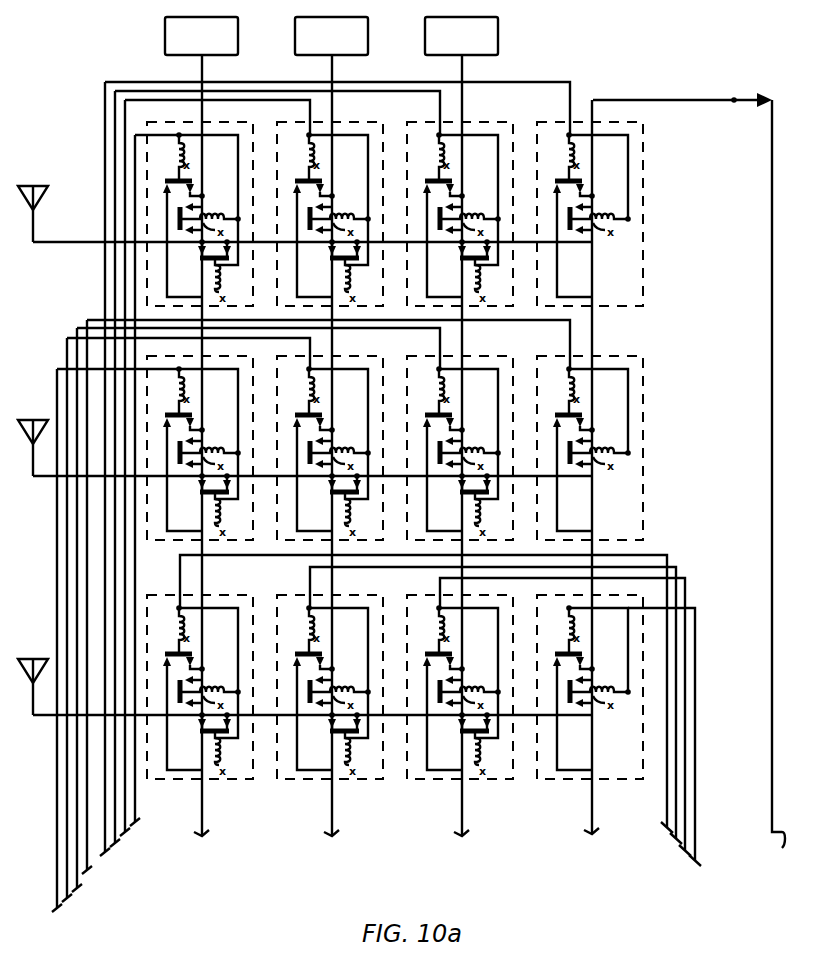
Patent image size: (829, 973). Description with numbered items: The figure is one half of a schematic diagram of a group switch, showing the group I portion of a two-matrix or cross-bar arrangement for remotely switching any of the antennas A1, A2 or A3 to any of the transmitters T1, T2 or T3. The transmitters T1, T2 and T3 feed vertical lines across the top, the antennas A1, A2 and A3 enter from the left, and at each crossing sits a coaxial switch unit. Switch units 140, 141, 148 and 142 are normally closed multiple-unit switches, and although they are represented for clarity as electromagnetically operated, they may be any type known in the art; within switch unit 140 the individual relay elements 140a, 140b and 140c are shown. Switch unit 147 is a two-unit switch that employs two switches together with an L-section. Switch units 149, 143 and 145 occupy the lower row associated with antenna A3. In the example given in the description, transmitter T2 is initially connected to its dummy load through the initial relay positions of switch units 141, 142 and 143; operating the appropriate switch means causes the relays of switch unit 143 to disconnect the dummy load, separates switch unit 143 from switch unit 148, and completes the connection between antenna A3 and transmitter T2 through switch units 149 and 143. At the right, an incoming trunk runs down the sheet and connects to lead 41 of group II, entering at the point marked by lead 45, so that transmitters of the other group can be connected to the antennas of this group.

The switch unit 140 is at (195, 205).
The crosspoint relay winding 140a is at (207, 156).
The crosspoint holding relay 140b is at (210, 216).
The crosspoint release winding 140c is at (200, 281).
The switch unit 141 is at (298, 122).
The switch unit 148 is at (436, 122).
The switch unit 147 is at (567, 124).
The switch unit 142 is at (347, 357).
The switch unit 149 is at (170, 595).
The switch unit 143 is at (295, 595).
The crosspoint circuit 145 is at (423, 595).
The incoming trunk lead 45 is at (734, 100).
The lead 41 is at (772, 410).
The antenna A1 is at (41, 184).
The antenna A2 is at (41, 418).
The antenna A3 is at (41, 657).
The transmitter T1 is at (201, 36).
The transmitter T2 is at (331, 36).
The transmitter T3 is at (461, 36).